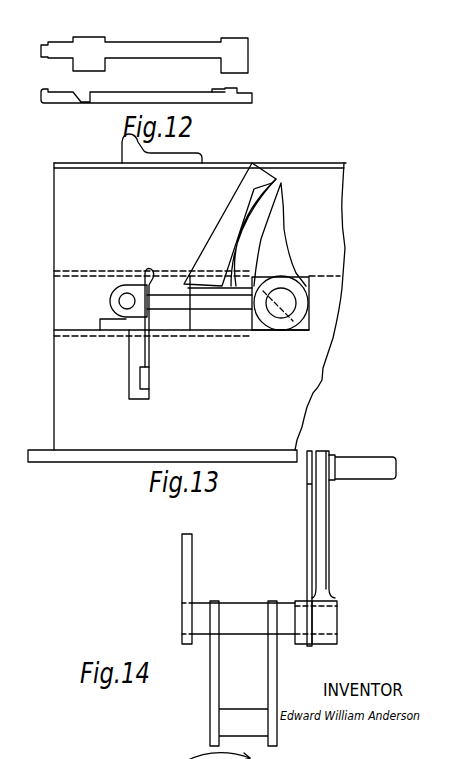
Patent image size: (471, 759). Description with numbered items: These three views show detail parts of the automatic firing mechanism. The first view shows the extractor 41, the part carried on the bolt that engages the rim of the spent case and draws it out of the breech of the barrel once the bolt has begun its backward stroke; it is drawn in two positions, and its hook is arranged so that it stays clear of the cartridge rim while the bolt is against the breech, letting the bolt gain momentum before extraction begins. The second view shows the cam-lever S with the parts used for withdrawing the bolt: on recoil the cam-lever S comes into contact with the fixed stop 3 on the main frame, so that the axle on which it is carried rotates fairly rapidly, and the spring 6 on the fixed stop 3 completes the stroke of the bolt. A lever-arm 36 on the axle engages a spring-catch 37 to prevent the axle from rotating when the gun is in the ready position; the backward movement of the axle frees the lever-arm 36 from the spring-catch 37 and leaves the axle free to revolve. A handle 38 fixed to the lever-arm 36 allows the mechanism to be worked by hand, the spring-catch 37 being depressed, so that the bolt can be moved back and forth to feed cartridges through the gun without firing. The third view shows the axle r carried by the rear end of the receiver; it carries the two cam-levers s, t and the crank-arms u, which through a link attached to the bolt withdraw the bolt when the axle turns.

In FIG. 12, the locking bar 41 is at (87, 42).
In FIG. 13, the fixed stop 3 is at (223, 205).
In FIG. 13, the spring 6 is at (229, 226).
In FIG. 13, the cam-lever S is at (269, 230).
In FIG. 13, the lever-arm 36 is at (192, 296).
In FIG. 14, the lever-arm 36 is at (299, 499).
In FIG. 13, the spring-catch 37 is at (141, 322).
In FIG. 14, the handle 38 is at (321, 507).
In FIG. 14, the cam-lever t is at (174, 561).
In FIG. 14, the axle r is at (243, 600).
In FIG. 14, the cam-lever s is at (292, 616).
In FIG. 14, the crank-arms u is at (210, 671).